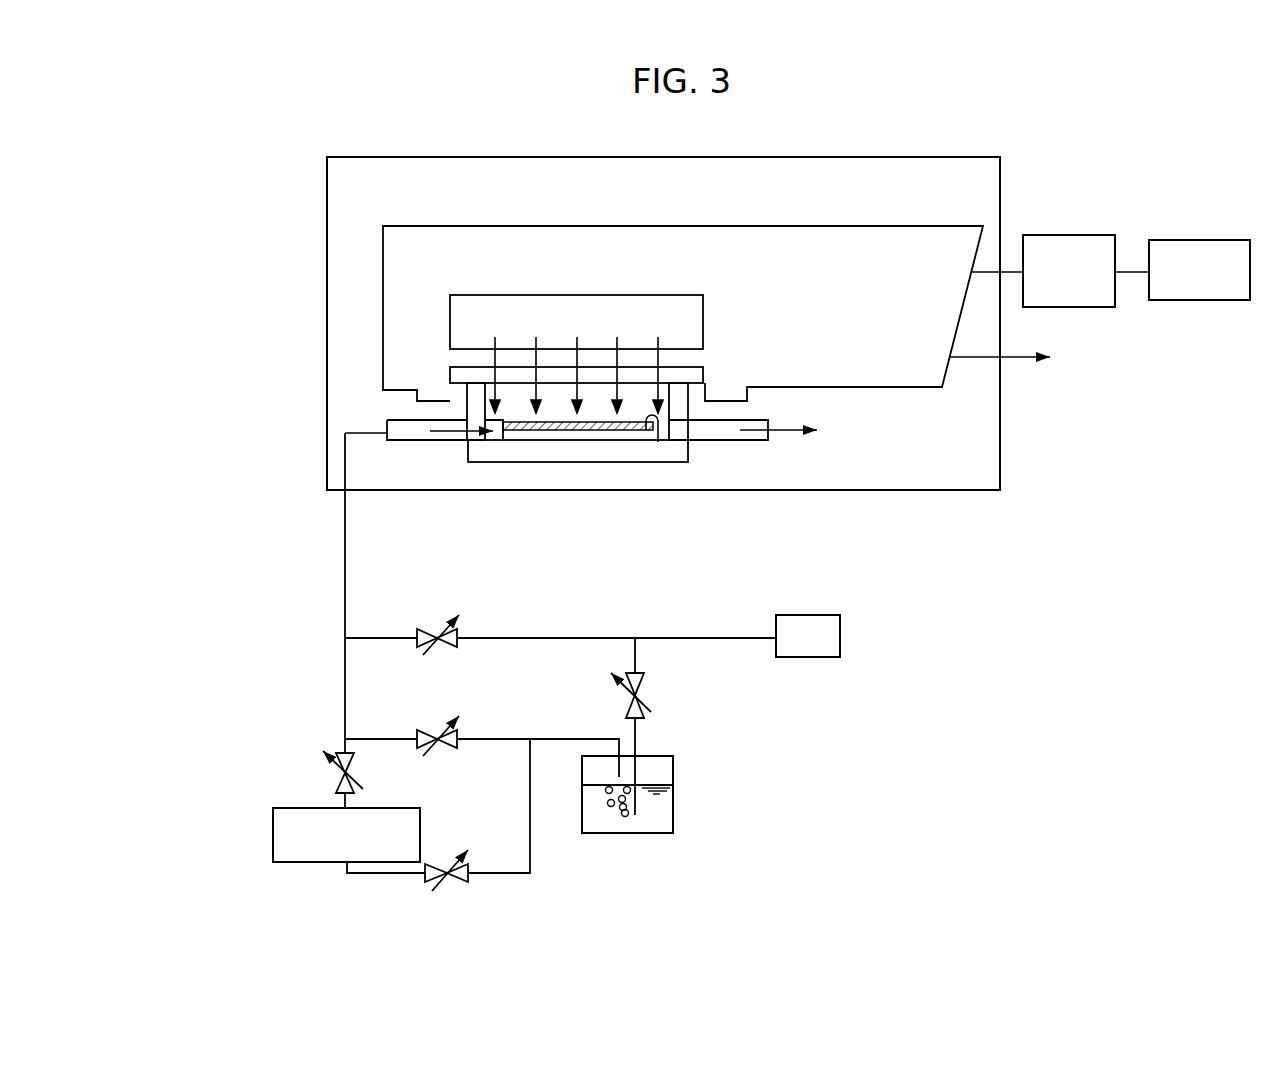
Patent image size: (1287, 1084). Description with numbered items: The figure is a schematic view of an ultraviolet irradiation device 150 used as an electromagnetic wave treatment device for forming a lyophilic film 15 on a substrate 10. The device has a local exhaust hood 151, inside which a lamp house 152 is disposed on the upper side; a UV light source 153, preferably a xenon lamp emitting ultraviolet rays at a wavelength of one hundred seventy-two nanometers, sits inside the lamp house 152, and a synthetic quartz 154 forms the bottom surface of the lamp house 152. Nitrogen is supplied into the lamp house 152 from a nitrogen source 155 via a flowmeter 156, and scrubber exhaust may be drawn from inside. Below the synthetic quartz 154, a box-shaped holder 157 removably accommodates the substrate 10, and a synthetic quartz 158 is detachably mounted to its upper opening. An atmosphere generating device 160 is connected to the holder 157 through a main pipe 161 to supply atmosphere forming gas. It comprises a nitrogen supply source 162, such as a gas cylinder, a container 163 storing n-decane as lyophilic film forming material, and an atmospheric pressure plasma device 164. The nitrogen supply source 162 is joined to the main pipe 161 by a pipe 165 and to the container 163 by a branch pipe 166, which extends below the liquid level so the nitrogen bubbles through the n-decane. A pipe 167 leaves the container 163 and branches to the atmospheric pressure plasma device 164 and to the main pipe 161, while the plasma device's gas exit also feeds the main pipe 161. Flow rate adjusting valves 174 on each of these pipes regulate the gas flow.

The ultraviolet irradiation device 150 is at (263, 213).
The local exhaust hood 151 is at (1000, 462).
The lamp house 152 is at (868, 223).
The UV light source 153 is at (703, 313).
The synthetic quartz 154 is at (703, 370).
The nitrogen source 155 is at (1200, 240).
The flowmeter 156 is at (1063, 235).
The holder 157 is at (463, 413).
The synthetic quartz 158 is at (454, 398).
The substrate 10 is at (548, 433).
The lyophilic film 15 is at (658, 442).
The atmosphere generating device 160 is at (265, 700).
The main pipe 161 is at (345, 612).
The nitrogen supply source 162 is at (810, 615).
The container 163 is at (673, 766).
The atmospheric pressure plasma device 164 is at (273, 832).
The pipe 165 is at (533, 636).
The branch pipe 166 is at (640, 728).
The pipe 167 is at (551, 737).
The flow rate adjusting valve 174 is at (422, 630).